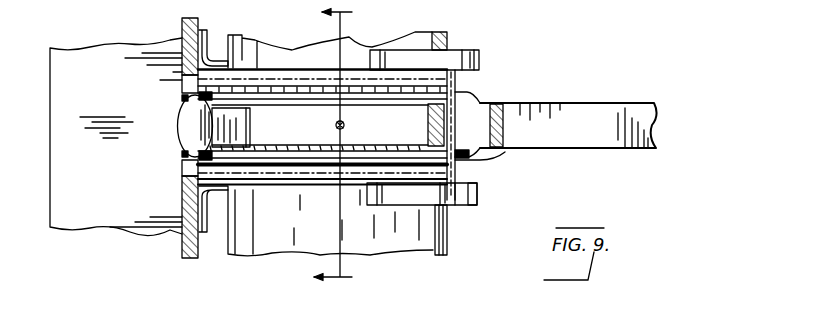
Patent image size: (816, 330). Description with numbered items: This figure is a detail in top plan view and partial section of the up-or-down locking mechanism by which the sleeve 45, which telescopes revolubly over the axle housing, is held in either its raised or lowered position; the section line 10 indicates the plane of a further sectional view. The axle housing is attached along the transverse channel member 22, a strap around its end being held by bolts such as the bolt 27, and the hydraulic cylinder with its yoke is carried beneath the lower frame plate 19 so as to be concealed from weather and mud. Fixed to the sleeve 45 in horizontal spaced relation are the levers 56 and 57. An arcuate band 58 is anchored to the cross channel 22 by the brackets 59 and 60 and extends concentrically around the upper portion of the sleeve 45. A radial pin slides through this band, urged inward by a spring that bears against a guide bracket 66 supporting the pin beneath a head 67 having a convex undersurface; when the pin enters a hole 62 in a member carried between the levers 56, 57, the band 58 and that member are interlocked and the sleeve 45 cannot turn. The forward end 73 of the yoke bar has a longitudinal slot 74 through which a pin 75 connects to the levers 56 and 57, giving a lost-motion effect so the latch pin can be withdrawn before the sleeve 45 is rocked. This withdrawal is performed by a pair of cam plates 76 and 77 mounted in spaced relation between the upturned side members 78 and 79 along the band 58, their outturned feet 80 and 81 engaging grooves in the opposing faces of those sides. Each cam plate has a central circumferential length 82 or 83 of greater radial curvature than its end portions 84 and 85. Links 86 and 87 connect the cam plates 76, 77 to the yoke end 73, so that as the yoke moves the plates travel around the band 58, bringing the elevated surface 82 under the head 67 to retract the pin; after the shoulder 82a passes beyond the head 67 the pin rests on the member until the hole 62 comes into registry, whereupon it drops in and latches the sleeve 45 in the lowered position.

The section line 10 is at (345, 145).
The lower frame plate 19 is at (564, 0).
The transverse channel member 22 is at (85, 213).
The bolt 27 is at (248, 38).
The sleeve 45 is at (247, 237).
The lever 56 is at (457, 193).
The lever 57 is at (472, 50).
The arcuate band 58 is at (272, 178).
The bracket 59 is at (203, 31).
The bracket 60 is at (182, 237).
The hole 62 is at (343, 122).
The guide bracket 66 is at (230, 123).
The head 67 is at (188, 128).
The yoke bar end 73 is at (596, 117).
The slot 74 is at (467, 117).
The pin 75 is at (460, 162).
The cam plate 76 is at (255, 96).
The cam plate 77 is at (300, 158).
The upturned side member 78 is at (197, 177).
The upturned side member 79 is at (186, 50).
The outturned foot 80 is at (369, 166).
The outturned foot 81 is at (245, 90).
The central circumferential length 82 is at (358, 157).
The shoulder 82a is at (375, 140).
The central circumferential length 83 is at (297, 100).
The end portion 84 is at (199, 88).
The end portion 85 is at (395, 98).
The link 86 is at (489, 104).
The link 87 is at (486, 156).